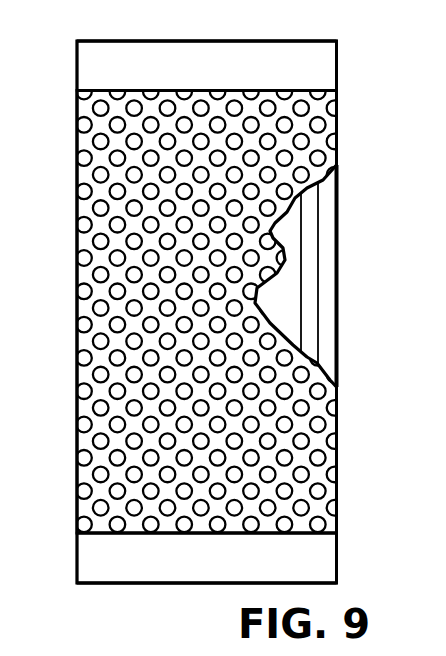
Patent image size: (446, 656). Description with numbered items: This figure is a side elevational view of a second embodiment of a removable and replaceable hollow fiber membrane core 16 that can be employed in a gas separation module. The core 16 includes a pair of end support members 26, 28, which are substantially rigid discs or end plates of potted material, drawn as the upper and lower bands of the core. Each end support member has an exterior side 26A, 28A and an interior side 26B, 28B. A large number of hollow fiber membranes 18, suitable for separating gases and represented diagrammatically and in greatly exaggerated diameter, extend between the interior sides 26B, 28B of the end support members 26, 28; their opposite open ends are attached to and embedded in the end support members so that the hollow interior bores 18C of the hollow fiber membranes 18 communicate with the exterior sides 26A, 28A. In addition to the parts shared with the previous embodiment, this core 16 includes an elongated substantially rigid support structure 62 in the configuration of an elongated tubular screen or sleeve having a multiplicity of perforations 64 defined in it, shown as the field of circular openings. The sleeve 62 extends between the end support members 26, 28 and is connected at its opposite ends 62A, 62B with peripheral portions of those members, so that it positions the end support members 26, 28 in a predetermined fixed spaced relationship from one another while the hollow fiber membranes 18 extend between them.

The hollow fiber membrane core 16 is at (374, 62).
The end support member 26 is at (339, 80).
The exterior side of end support member 26A is at (194, 40).
The interior side of end support member 26B is at (312, 92).
The rigid support structure 62 is at (339, 404).
The end of rigid support structure 62A is at (336, 104).
The end of rigid support structure 62B is at (332, 507).
The perforations 64 is at (81, 323).
The hollow fiber membranes 18 is at (337, 273).
The hollow interior bores 18C is at (309, 313).
The end support member 28 is at (340, 557).
The exterior side of end support member 28A is at (193, 585).
The interior side of end support member 28B is at (195, 526).